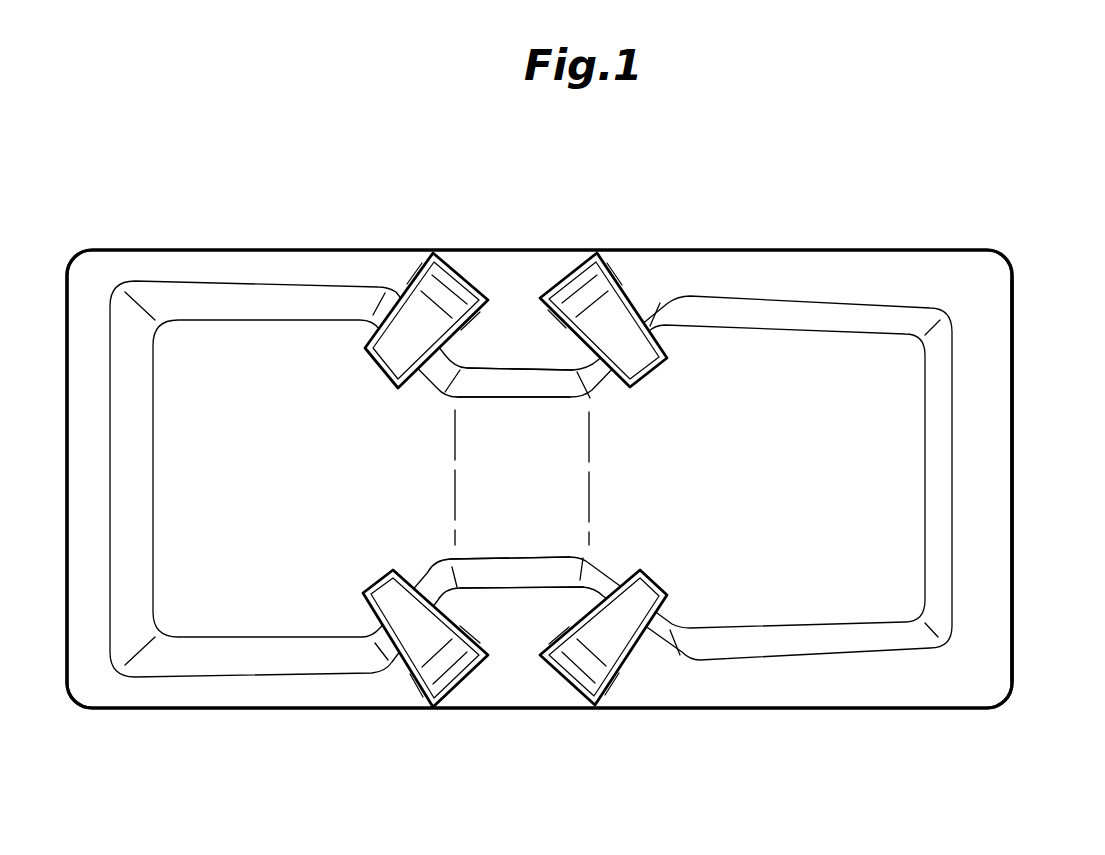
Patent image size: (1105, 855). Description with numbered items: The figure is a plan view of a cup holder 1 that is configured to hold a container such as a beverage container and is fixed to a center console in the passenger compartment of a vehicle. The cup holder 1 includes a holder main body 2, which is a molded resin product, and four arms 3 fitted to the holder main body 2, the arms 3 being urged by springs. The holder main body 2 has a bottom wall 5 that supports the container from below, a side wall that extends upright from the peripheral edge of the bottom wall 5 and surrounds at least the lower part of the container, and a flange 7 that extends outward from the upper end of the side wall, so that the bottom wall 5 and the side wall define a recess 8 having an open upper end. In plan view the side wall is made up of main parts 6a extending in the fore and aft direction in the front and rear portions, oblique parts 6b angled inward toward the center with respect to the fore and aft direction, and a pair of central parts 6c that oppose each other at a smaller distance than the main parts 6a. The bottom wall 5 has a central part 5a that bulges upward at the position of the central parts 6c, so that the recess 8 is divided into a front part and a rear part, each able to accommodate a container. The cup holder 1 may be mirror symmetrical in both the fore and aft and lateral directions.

The cup holder 1 is at (903, 147).
The holder main body 2 is at (903, 248).
The arm 3 is at (467, 268).
The bottom wall 5 is at (897, 458).
The central part of the bottom wall 5a is at (560, 452).
The main parts of the side wall 6a is at (247, 300).
The oblique parts of the side wall 6b is at (395, 288).
The central parts of the side wall 6c is at (512, 380).
The flange 7 is at (997, 565).
The recess 8 is at (933, 407).